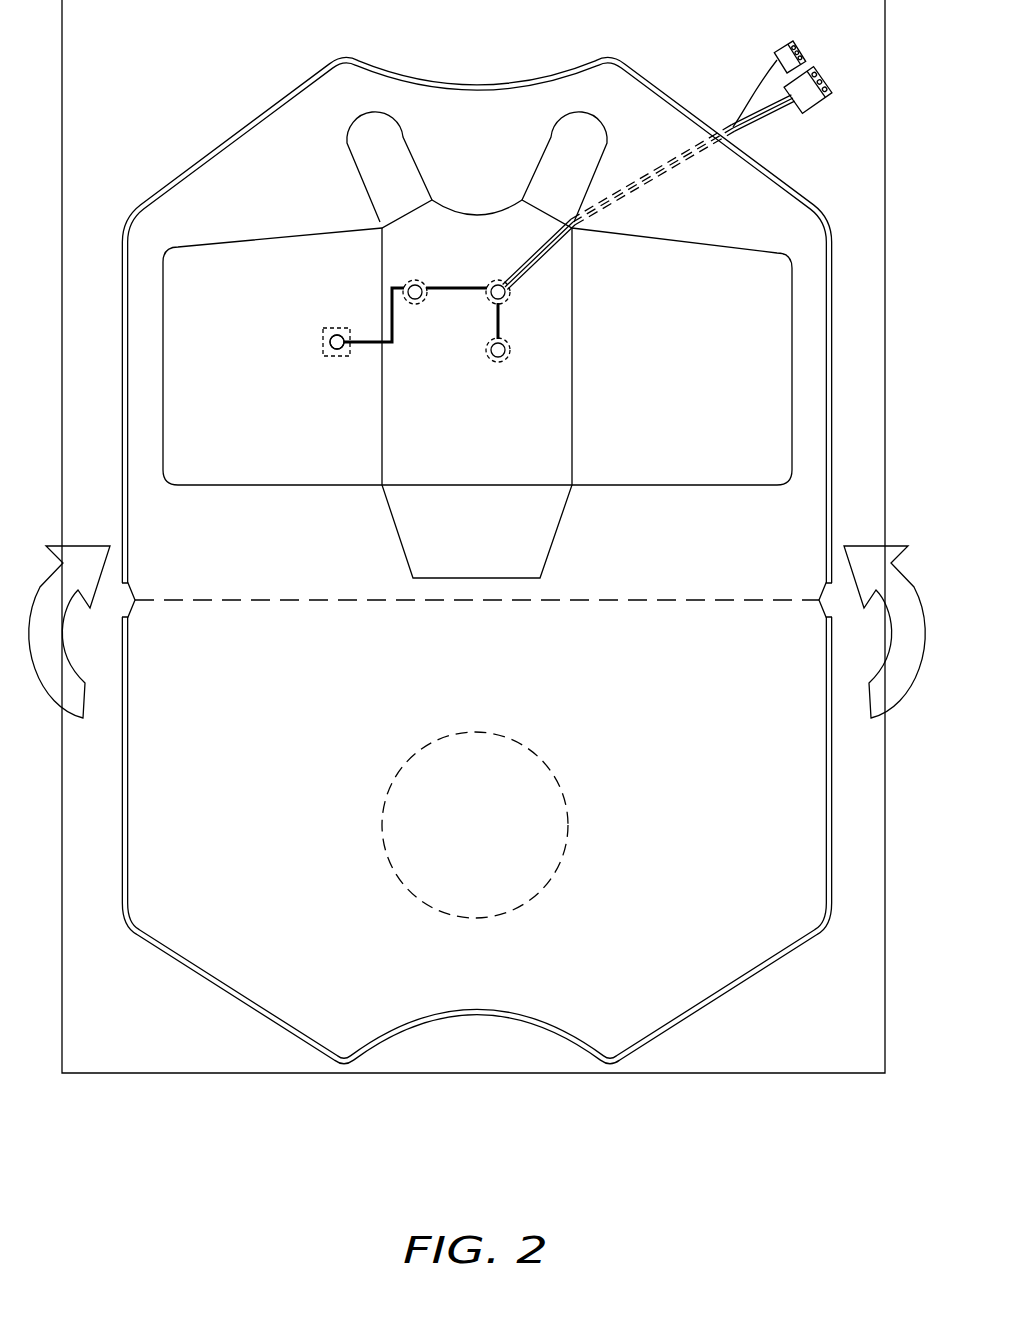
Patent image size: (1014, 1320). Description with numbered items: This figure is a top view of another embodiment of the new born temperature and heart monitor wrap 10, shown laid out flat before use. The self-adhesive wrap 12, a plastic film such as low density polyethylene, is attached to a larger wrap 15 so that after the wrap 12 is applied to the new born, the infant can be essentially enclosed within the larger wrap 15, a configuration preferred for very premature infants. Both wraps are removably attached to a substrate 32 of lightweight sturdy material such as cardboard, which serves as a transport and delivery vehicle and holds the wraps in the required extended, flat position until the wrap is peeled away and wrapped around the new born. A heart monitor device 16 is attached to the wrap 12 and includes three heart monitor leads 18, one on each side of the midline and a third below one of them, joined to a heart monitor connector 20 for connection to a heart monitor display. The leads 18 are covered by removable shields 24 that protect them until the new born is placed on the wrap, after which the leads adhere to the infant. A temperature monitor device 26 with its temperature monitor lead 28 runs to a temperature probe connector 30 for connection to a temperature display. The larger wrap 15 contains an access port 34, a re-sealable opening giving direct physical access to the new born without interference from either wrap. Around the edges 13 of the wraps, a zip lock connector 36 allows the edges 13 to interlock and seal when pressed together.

The new born temperature and heart monitor wrap 10 is at (165, 1147).
The wrap 12 is at (745, 437).
The edges 13 is at (121, 415).
The larger wrap 15 is at (131, 1017).
The heart monitor device 16 is at (425, 277).
The heart monitor lead 18 is at (841, 1017).
The heart monitor connector 20 is at (826, 100).
The removable shield 24 is at (417, 279).
The temperature monitor device 26 is at (336, 359).
The temperature monitor lead 28 is at (329, 341).
The temperature probe connector 30 is at (783, 45).
The substrate 32 is at (56, 971).
The access port 34 is at (563, 793).
The zip lock connector 36 is at (121, 286).